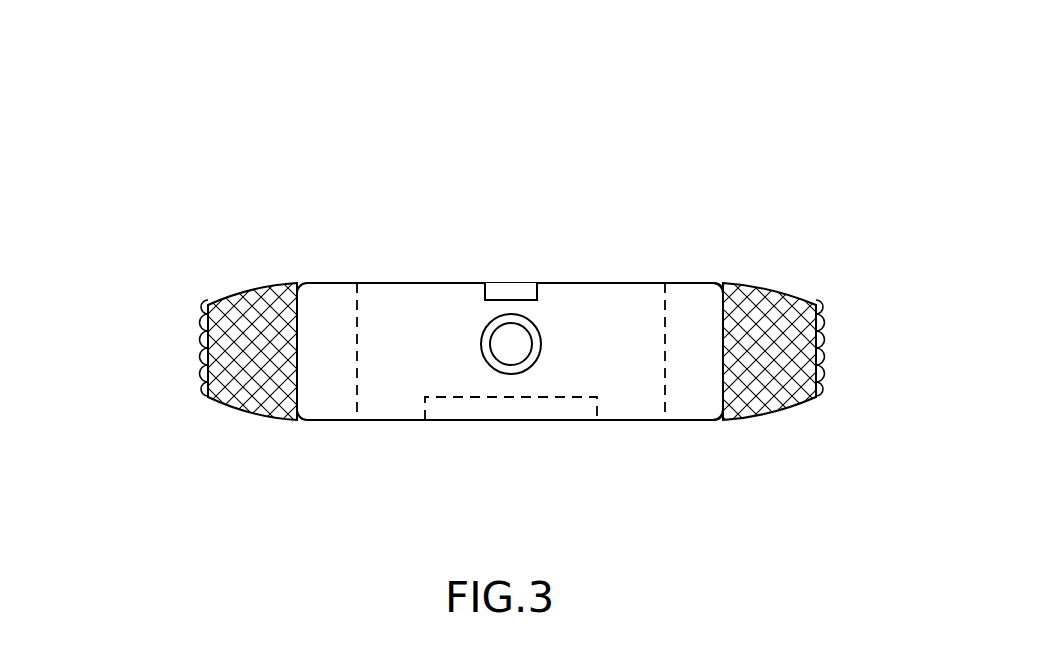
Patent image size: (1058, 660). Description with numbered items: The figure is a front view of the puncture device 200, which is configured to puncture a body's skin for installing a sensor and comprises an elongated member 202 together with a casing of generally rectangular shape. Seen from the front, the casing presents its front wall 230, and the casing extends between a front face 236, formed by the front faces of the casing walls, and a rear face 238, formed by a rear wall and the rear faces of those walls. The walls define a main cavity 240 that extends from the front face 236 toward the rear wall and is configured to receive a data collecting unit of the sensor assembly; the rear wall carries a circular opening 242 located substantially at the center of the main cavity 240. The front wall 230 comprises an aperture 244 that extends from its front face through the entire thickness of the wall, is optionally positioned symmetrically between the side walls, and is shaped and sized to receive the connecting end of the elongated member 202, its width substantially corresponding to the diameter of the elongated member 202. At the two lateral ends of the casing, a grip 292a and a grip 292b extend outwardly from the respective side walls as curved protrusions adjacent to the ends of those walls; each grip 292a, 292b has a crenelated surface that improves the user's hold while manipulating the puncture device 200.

The puncture device 200 is at (212, 178).
The elongated member 202 is at (481, 357).
The front wall 230 is at (418, 330).
The front face 236 is at (688, 280).
The rear face 238 is at (643, 422).
The main cavity 240 is at (597, 282).
The opening 242 is at (536, 420).
The aperture 244 is at (520, 295).
The grip 292a is at (826, 342).
The grip 292b is at (199, 343).